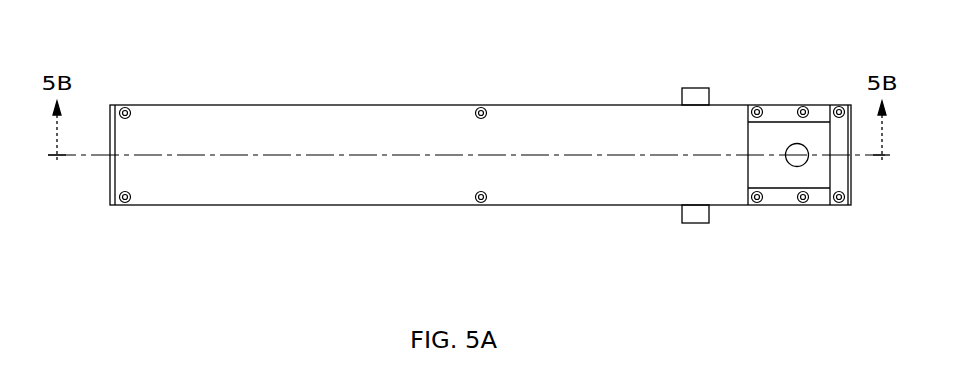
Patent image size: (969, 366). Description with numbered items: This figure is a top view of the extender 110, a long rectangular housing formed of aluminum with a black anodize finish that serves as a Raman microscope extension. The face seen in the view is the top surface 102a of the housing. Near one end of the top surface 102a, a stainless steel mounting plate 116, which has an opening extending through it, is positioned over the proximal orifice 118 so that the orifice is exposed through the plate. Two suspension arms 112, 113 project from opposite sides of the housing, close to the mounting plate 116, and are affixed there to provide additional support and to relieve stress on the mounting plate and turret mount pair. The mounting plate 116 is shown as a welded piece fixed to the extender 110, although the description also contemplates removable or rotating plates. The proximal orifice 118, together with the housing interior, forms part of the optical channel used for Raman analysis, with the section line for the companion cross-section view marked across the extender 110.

The extender 110 is at (329, 66).
The top surface 102a is at (603, 142).
The suspension arm 112 is at (682, 92).
The suspension arm 113 is at (681, 212).
The mounting plate 116 is at (787, 176).
The proximal orifice 118 is at (797, 143).